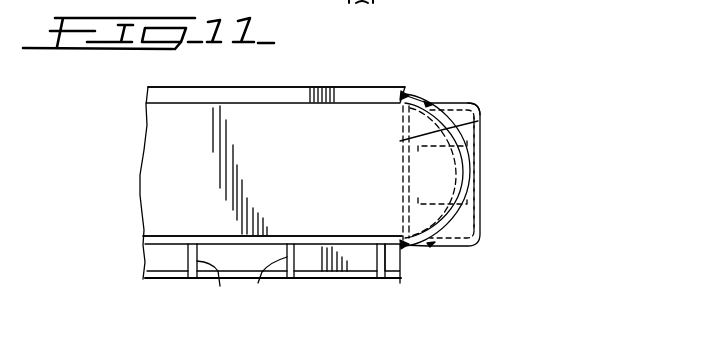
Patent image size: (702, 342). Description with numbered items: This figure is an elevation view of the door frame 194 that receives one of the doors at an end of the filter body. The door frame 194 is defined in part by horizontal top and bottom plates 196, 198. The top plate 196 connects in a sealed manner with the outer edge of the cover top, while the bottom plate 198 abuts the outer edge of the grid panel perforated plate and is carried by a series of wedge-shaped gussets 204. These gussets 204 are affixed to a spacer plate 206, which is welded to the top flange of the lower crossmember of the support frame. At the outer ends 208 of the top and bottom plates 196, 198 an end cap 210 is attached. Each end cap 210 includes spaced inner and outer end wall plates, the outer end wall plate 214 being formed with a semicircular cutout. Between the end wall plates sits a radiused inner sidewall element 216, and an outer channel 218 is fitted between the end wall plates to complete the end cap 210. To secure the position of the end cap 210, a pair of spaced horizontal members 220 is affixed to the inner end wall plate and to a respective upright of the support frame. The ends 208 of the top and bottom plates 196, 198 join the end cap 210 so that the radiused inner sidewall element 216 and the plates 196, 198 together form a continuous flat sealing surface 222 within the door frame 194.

The door frame 194 is at (369, 80).
The top plate 196 is at (287, 96).
The bottom plate 198 is at (318, 236).
The wedge-shaped gussets 204 is at (243, 295).
The spacer plate 206 is at (342, 250).
The outer ends 208 is at (408, 96).
The end cap 210 is at (480, 168).
The outer end wall plate 214 is at (480, 124).
The radiused inner sidewall element 216 is at (406, 140).
The outer channel 218 is at (480, 150).
The horizontal members 220 is at (418, 200).
The sealing surface 222 is at (300, 104).